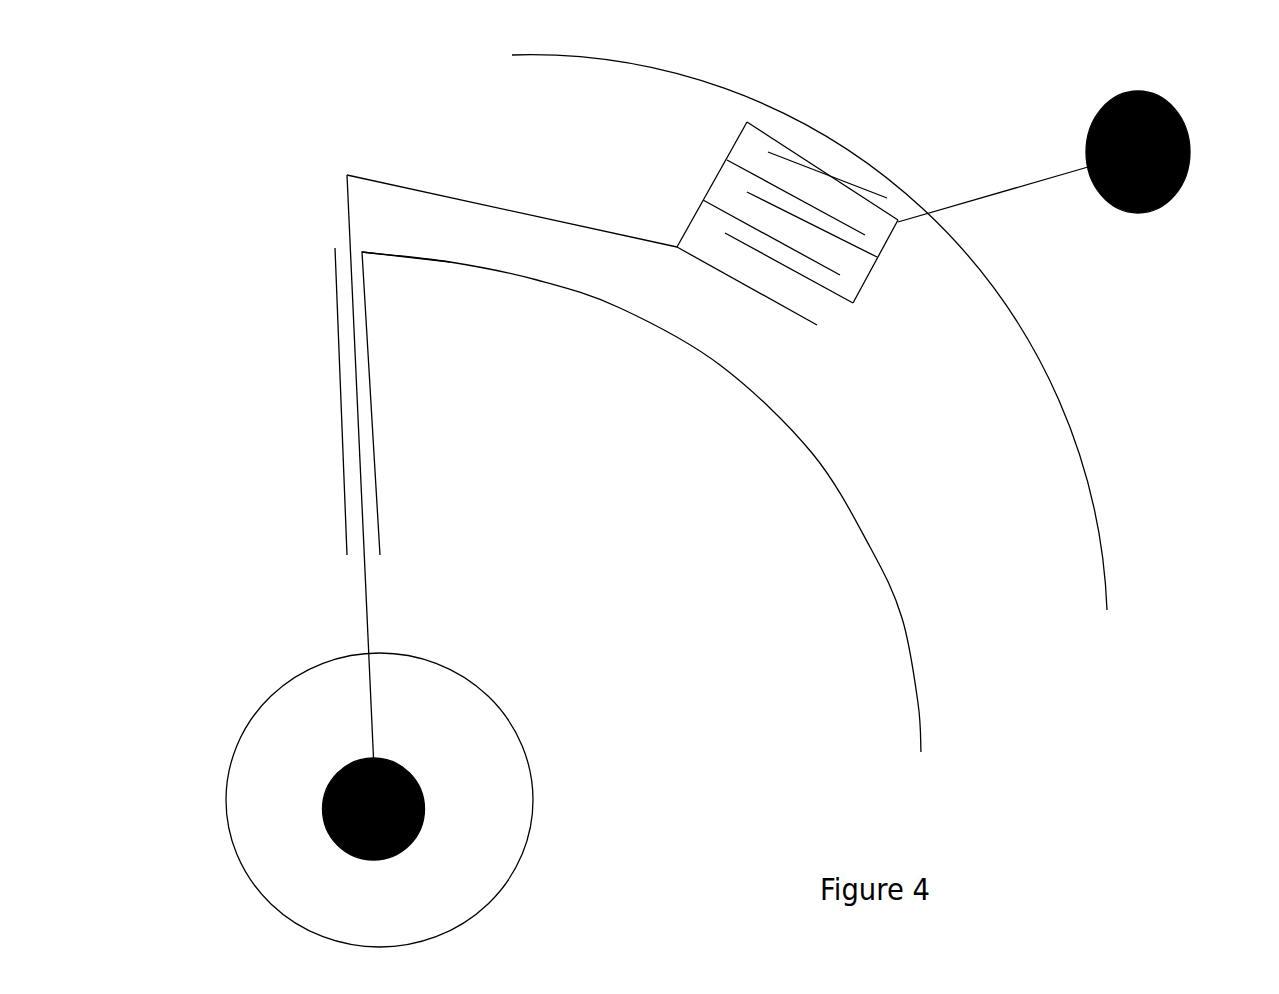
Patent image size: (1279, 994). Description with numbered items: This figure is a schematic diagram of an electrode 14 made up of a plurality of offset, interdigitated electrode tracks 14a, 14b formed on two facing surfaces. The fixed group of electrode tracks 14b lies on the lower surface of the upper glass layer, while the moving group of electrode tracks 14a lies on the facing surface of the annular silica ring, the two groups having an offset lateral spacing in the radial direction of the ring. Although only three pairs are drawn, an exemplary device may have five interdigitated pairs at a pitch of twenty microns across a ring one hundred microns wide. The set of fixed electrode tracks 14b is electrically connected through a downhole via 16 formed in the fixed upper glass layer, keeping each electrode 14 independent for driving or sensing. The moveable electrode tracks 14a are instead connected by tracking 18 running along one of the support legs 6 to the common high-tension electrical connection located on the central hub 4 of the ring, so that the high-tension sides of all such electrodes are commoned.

The central hub 4 is at (473, 775).
The support leg 6 is at (380, 503).
The electrode 14 is at (714, 390).
The moving group of electrode tracks 14a is at (698, 148).
The fixed group of electrode tracks 14b is at (888, 250).
The downhole via 16 is at (1202, 177).
The tracking 18 is at (355, 368).